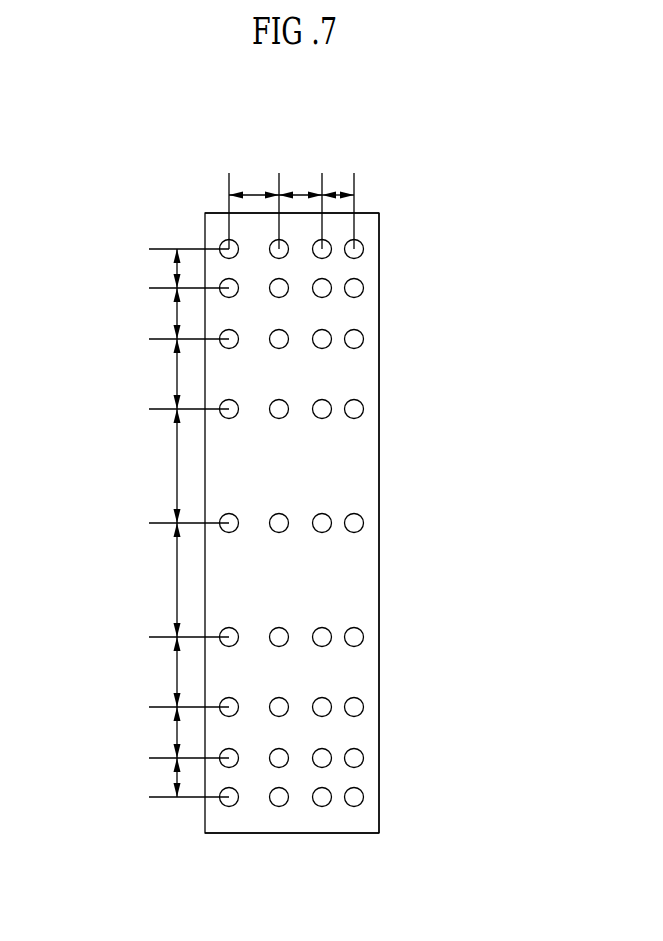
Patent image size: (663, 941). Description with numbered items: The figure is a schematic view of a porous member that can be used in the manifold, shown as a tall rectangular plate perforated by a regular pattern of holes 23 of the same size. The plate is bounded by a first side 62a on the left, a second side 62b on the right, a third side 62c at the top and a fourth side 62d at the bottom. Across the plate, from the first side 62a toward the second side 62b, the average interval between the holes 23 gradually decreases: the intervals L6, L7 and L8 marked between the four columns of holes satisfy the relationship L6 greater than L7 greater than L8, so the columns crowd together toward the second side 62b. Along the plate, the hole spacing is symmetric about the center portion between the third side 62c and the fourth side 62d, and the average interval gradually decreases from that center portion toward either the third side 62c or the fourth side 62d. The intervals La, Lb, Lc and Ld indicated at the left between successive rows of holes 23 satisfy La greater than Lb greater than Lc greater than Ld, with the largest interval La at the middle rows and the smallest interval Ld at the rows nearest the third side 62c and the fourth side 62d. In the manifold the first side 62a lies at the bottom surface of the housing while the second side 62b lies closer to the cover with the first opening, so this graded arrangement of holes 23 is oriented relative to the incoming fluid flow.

The first side 62a is at (205, 227).
The second side 62b is at (379, 400).
The third side 62c is at (368, 213).
The fourth side 62d is at (218, 835).
The holes 23 is at (354, 523).
The interval L6 is at (257, 192).
The interval L7 is at (303, 192).
The interval L8 is at (338, 192).
The interval La is at (177, 470).
The interval Lb is at (177, 375).
The interval Lc is at (177, 316).
The interval Ld is at (177, 270).